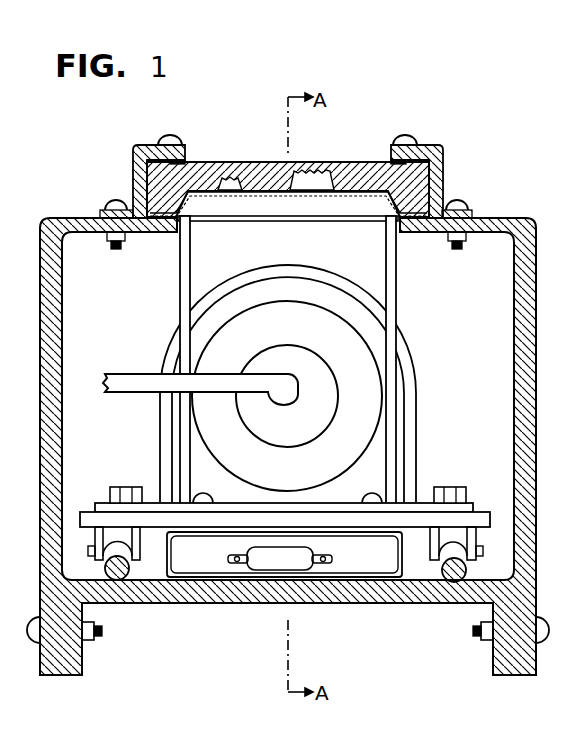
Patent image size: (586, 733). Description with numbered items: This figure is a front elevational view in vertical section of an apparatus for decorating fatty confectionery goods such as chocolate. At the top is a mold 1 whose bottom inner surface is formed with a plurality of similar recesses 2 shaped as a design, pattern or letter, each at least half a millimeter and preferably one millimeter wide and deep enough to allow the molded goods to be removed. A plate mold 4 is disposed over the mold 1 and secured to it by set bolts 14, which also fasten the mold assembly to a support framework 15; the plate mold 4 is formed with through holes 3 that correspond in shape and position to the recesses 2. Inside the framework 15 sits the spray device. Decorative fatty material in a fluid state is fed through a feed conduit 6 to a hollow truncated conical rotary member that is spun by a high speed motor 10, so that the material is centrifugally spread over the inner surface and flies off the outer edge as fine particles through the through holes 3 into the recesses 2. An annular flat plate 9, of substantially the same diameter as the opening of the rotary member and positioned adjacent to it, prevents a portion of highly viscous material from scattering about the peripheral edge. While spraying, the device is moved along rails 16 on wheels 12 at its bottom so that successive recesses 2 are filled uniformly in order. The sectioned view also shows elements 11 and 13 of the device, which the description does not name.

The mold 1 is at (357, 158).
The recesses 2 is at (226, 178).
The through holes 3 is at (228, 198).
The plate mold 4 is at (358, 197).
The feed conduit 6 is at (130, 377).
The annular flat plate 9 is at (363, 423).
The high speed motor 10 is at (372, 328).
The frame post 11 is at (390, 280).
The wheels 12 is at (134, 576).
The box 13 is at (217, 570).
The set bolts 14 is at (162, 134).
The support framework 15 is at (528, 397).
The rails 16 is at (116, 581).